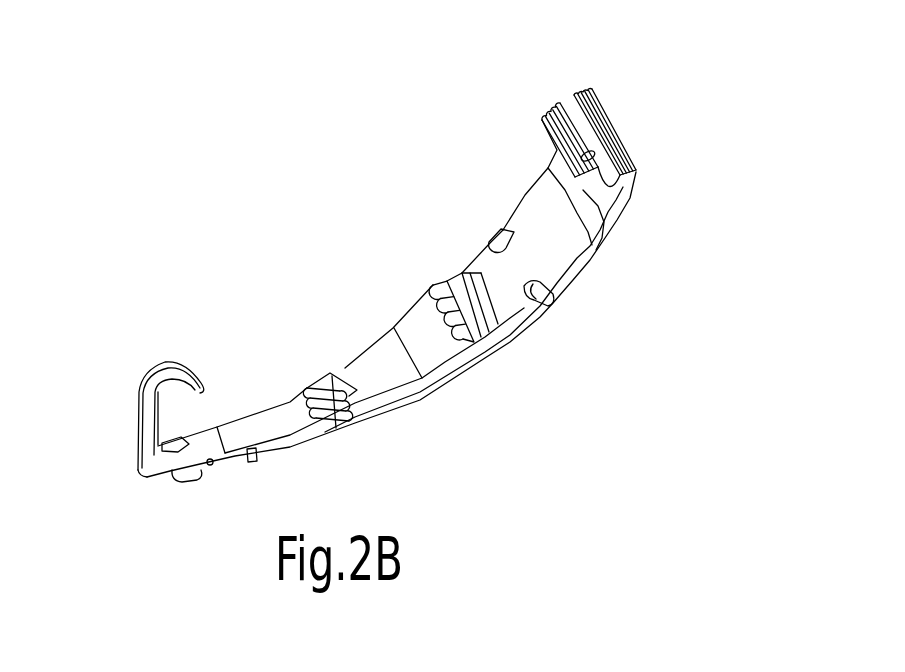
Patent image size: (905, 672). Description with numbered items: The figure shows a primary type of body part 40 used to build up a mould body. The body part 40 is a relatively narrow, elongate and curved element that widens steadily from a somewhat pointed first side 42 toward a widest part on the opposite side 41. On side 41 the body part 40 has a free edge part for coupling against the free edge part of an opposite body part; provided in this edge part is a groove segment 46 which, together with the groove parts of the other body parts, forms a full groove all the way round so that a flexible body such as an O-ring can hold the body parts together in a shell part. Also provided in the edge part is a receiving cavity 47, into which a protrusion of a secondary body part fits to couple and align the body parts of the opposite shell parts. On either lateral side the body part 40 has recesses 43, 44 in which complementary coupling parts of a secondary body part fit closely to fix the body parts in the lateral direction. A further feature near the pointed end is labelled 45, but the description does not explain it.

The primary type of body part 40 is at (260, 223).
The widest side 41 is at (630, 192).
The first side 42 is at (141, 471).
The recess 43 is at (365, 417).
The recess 44 is at (543, 292).
The hook 45 is at (140, 388).
The groove segment 46 is at (576, 116).
The receiving cavity 47 is at (622, 150).